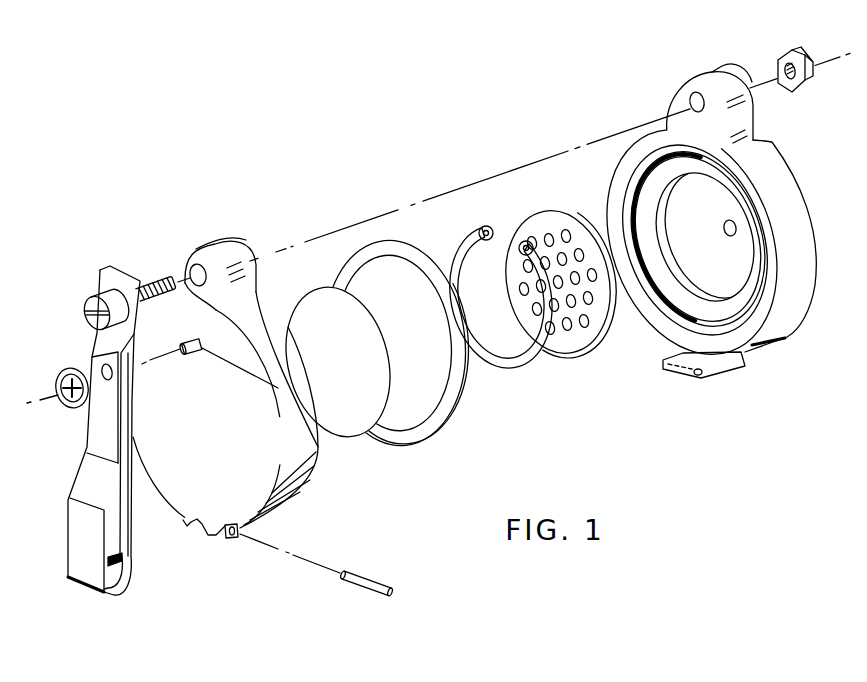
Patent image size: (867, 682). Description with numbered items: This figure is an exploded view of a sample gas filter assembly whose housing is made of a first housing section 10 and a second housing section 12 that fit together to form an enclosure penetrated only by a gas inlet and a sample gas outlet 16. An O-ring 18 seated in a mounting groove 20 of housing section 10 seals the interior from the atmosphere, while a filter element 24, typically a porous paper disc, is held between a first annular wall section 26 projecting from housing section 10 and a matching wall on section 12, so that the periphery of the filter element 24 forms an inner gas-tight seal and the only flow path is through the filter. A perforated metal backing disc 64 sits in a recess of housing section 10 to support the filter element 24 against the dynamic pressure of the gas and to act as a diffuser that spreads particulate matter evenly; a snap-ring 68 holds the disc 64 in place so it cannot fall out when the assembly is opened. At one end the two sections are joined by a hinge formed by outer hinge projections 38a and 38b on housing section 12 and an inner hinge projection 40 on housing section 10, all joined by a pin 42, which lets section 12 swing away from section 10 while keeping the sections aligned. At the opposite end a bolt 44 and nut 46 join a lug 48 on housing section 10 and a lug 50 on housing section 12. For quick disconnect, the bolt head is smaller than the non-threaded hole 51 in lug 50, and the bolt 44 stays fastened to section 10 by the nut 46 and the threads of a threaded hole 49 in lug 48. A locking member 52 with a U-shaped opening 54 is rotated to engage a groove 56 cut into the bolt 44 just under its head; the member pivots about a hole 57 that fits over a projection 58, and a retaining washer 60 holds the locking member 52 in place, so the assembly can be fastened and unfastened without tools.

The first housing section 10 is at (710, 213).
The second housing section 12 is at (225, 441).
The sample gas outlet 16 is at (726, 231).
The O-ring 18 is at (356, 247).
The mounting groove 20 is at (640, 155).
The filter element 24 is at (345, 437).
The first annular wall section 26 is at (558, 237).
The outer hinge projection 38a is at (184, 530).
The outer hinge projection 38b is at (233, 540).
The inner hinge projection 40 is at (731, 369).
The pin 42 is at (375, 593).
The bolt 44 is at (157, 285).
The nut 46 is at (805, 50).
The lug 48 is at (692, 80).
The threaded hole 49 is at (692, 101).
The lug 50 is at (205, 246).
The non-threaded hole 51 is at (187, 267).
The locking member 52 is at (68, 584).
The U-shaped opening 54 is at (84, 287).
The groove 56 is at (88, 308).
The hole 57 is at (105, 380).
The projection 58 is at (285, 418).
The retaining washer 60 is at (58, 377).
The perforated metal backing disc 64 is at (576, 215).
The snap-ring 68 is at (487, 227).